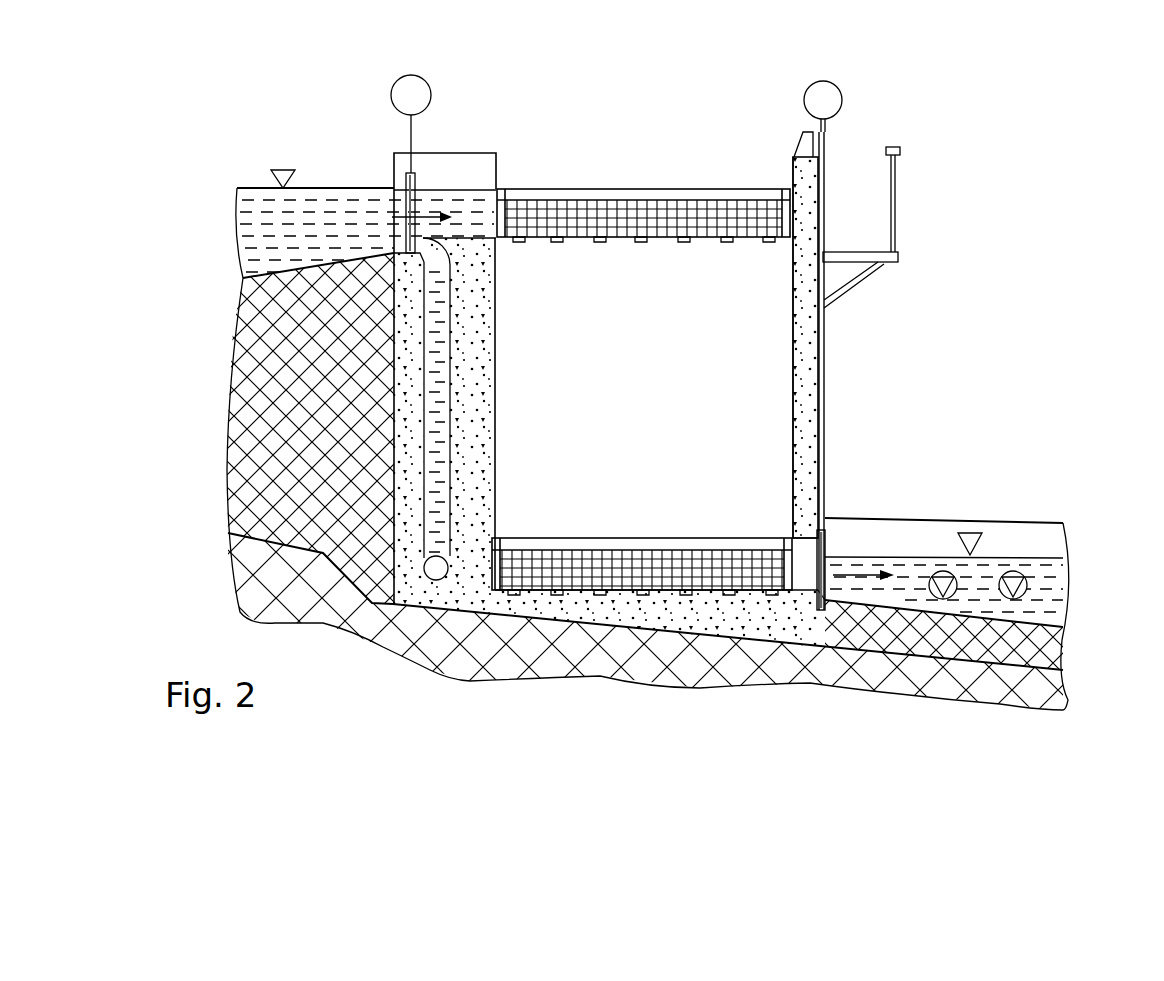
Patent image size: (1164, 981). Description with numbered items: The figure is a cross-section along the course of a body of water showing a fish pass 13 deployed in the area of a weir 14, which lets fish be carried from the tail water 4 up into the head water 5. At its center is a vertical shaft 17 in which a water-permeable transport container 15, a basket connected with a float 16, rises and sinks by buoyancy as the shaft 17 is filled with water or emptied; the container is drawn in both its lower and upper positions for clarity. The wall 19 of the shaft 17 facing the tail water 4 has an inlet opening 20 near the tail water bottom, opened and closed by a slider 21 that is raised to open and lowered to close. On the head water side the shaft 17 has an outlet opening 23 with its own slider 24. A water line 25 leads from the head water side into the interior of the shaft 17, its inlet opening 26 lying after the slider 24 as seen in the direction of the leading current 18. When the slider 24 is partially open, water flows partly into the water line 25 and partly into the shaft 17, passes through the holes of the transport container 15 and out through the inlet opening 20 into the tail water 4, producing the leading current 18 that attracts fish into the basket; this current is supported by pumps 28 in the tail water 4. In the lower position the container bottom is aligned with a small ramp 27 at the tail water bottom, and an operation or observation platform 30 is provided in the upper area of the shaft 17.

The tail water 4 is at (915, 565).
The head water 5 is at (263, 218).
The fish pass 13 is at (1024, 286).
The weir 14 is at (257, 468).
The transport container 15 is at (567, 213).
The float 16 is at (652, 197).
The shaft 17 is at (803, 422).
The leading current 18 is at (370, 213).
The wall 19 is at (803, 357).
The inlet opening 20 is at (803, 545).
The slider 21 is at (823, 603).
The outlet opening 23 is at (477, 210).
The slider 24 is at (413, 168).
The water line 25 is at (435, 528).
The inlet opening of the water line 26 is at (395, 243).
The ramp 27 is at (805, 596).
The pumps 28 is at (1027, 587).
The operation or observation platform 30 is at (897, 185).